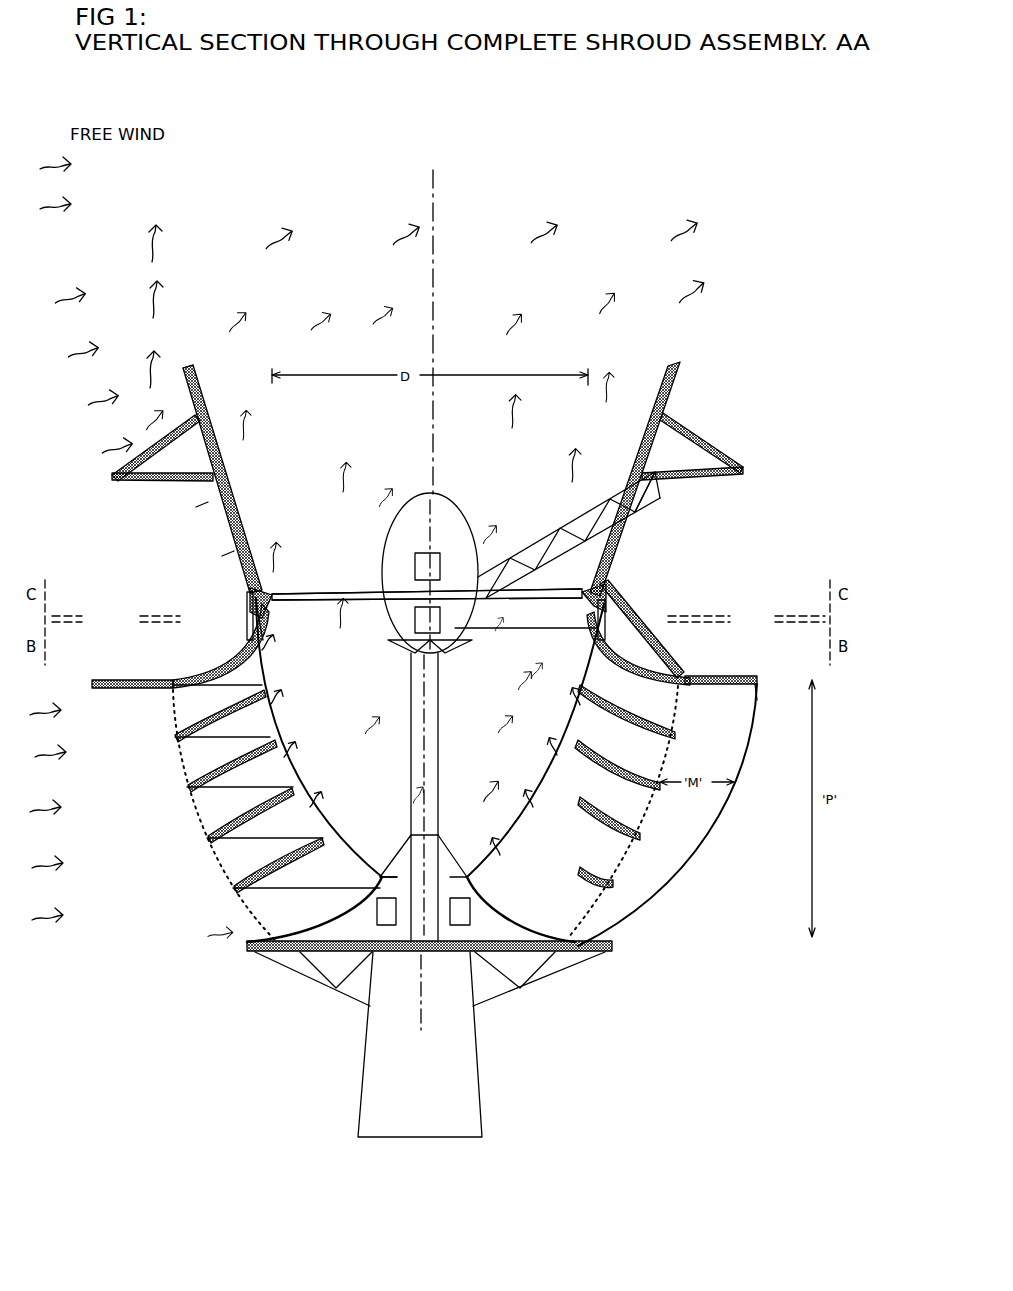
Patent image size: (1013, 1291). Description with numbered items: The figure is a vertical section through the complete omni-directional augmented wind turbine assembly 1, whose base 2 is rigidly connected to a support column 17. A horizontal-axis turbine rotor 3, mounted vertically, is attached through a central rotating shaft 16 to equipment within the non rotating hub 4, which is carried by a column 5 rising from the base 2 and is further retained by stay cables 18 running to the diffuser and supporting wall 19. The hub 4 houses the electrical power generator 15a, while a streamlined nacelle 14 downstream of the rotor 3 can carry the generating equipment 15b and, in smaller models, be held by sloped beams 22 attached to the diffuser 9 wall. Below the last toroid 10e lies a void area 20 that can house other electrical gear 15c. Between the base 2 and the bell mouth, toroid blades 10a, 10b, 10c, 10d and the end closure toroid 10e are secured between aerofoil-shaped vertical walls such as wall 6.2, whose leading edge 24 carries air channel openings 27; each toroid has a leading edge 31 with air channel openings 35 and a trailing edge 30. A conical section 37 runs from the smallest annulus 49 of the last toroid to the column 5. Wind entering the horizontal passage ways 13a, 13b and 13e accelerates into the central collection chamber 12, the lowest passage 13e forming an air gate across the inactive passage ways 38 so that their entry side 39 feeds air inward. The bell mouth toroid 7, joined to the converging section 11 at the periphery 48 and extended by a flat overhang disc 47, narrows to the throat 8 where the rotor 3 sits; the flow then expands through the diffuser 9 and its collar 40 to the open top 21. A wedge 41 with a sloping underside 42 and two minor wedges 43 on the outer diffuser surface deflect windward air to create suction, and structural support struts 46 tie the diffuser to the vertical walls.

The omni-directional augmented wind turbine assembly 1 is at (724, 552).
The base 2 is at (555, 946).
The turbine rotor 3 is at (575, 585).
The non rotating hub 4 is at (457, 652).
The column 5 is at (457, 724).
The vertical wall 6.2 is at (741, 723).
The bell mouth toroid 7 is at (638, 662).
The throat 8 is at (573, 603).
The diffuser 9 is at (623, 522).
The toroid blade 10a is at (167, 726).
The toroid blade 10b is at (175, 780).
The toroid blade 10c is at (205, 838).
The toroid blade 10d is at (233, 888).
The end closure toroid 10e is at (313, 917).
The converging section 11 is at (272, 606).
The central collection chamber 12 is at (336, 741).
The horizontal passage way 13a is at (167, 697).
The horizontal passage way 13b is at (182, 755).
The lowest passage way 13e is at (285, 912).
The streamlined nacelle 14 is at (378, 530).
The electrical power generator 15a is at (417, 620).
The generating equipment 15b is at (409, 556).
The other electrical gear 15c is at (336, 988).
The central rotating shaft 16 is at (400, 601).
The support column 17 is at (485, 1056).
The stay cables 18 is at (542, 629).
The supporting wall 19 is at (247, 634).
The void area 20 is at (472, 918).
The open top 21 is at (475, 335).
The sloped beams 22 is at (539, 519).
The leading edge 24 is at (766, 691).
The air channel openings 27 is at (751, 756).
The trailing edge 30 is at (290, 717).
The leading edge 31 is at (183, 786).
The air channel openings 35 is at (166, 670).
The conical section 37 is at (388, 832).
The inactive passage ways 38 is at (238, 513).
The entry side 39 is at (207, 413).
The collar 40 is at (207, 388).
The wedge 41 is at (146, 439).
The underside of the wedge 42 is at (158, 480).
The minor wedges 43 is at (200, 508).
The structural support struts 46 is at (638, 608).
The overhang disc 47 is at (725, 675).
The largest toroid's internal annulus 48 is at (264, 627).
The smallest toroid's internal annulus 49 is at (386, 865).